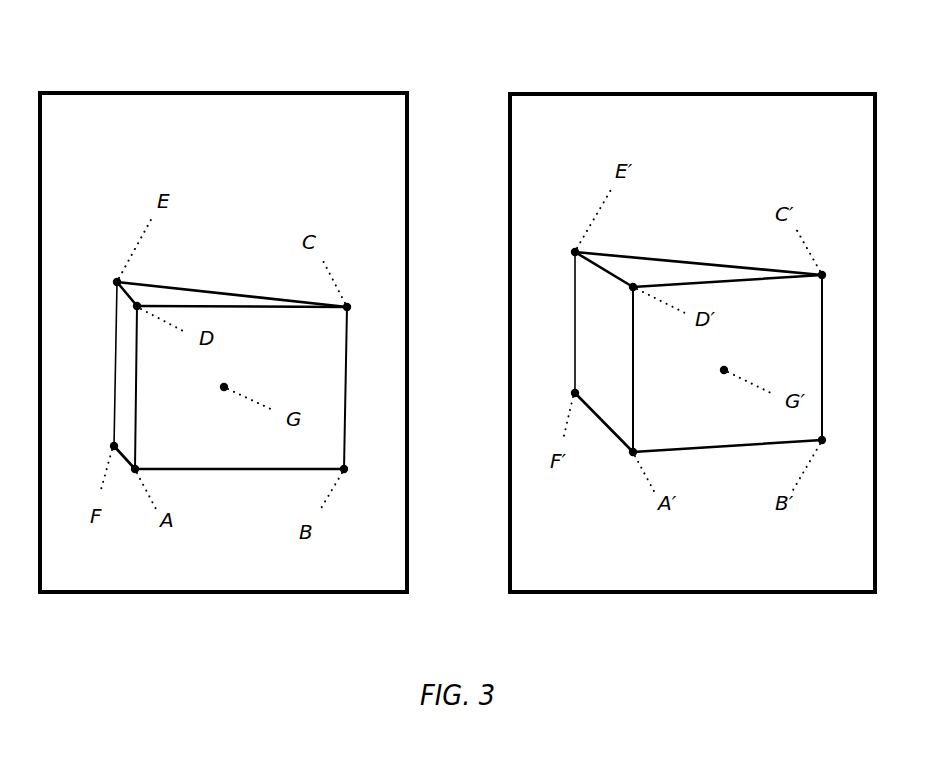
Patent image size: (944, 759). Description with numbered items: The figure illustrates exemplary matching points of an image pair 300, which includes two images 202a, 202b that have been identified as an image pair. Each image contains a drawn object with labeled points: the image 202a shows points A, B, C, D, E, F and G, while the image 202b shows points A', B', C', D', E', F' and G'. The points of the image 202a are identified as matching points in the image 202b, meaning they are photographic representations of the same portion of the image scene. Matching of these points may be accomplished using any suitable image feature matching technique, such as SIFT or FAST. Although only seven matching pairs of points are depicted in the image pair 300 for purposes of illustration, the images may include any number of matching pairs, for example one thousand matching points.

The image 202a is at (343, 87).
The image 202b is at (794, 88).
The image pair 300 is at (694, 47).